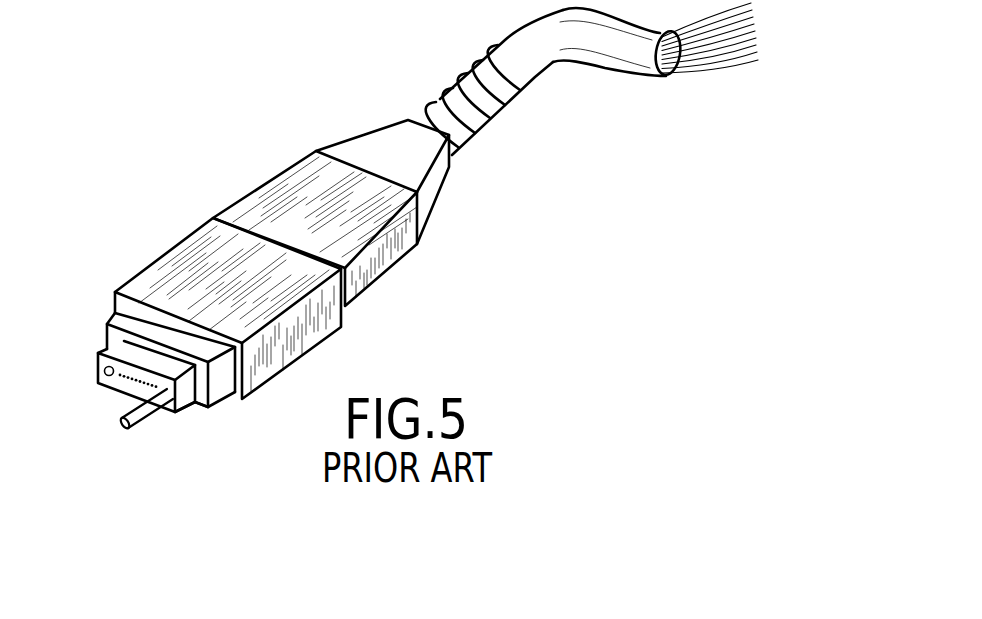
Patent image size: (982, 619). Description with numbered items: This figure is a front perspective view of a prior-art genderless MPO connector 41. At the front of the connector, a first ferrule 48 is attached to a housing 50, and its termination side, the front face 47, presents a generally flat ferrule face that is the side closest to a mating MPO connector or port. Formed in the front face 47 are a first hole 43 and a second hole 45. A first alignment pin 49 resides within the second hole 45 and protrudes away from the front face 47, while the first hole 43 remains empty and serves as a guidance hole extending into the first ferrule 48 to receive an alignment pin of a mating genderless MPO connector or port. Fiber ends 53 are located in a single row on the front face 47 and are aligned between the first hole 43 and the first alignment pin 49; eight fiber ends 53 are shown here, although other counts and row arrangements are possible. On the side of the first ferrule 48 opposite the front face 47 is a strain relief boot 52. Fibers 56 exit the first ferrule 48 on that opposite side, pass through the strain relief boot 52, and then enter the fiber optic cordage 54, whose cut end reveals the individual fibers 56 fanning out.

The genderless MPO connector 41 is at (177, 197).
The first hole 43 is at (114, 369).
The second hole 45 is at (179, 404).
The front face 47 is at (135, 368).
The first ferrule 48 is at (188, 388).
The first alignment pin 49 is at (143, 413).
The housing 50 is at (172, 336).
The strain relief boot 52 is at (527, 73).
The fiber ends 53 is at (125, 390).
The fiber optic cordage 54 is at (628, 57).
The fibers 56 is at (780, 0).